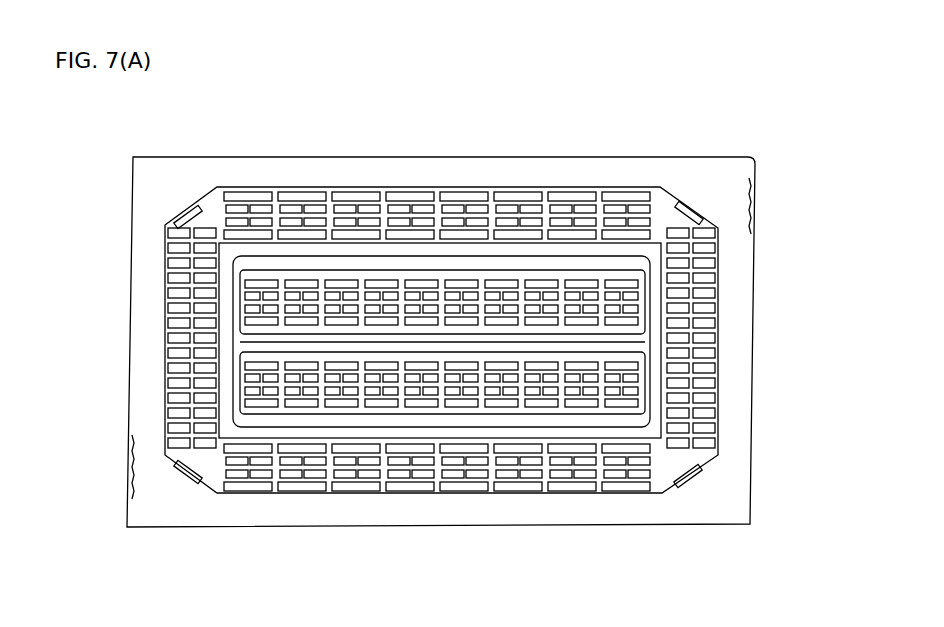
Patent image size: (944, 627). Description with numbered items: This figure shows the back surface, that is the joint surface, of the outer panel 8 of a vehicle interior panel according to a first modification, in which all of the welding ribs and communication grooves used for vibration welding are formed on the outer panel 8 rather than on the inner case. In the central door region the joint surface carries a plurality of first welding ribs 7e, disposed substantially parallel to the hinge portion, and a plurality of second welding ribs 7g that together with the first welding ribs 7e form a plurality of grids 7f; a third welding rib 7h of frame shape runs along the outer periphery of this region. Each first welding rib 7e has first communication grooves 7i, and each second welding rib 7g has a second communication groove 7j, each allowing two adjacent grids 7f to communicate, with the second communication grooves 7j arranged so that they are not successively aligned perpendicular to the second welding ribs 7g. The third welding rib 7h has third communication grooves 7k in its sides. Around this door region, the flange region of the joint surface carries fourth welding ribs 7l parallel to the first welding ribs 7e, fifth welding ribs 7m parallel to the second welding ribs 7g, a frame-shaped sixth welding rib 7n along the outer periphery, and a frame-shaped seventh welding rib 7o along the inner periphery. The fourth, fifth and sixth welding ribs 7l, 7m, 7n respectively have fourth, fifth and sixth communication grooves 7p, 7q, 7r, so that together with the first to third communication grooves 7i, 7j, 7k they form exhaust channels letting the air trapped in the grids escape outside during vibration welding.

The outer panel 8 is at (255, 112).
The third communication grooves 7k is at (163, 227).
The third welding rib 7h is at (262, 272).
The second welding ribs 7g is at (362, 285).
The first welding ribs 7e is at (410, 293).
The grids 7f is at (460, 292).
The first communication grooves 7i is at (503, 295).
The second communication groove 7j is at (600, 292).
The fourth welding ribs 7l is at (720, 283).
The fifth welding ribs 7m is at (717, 323).
The sixth welding rib 7n is at (717, 340).
The fifth communication grooves 7q is at (717, 377).
The sixth communication grooves 7r is at (717, 392).
The seventh welding rib 7o is at (717, 442).
The fourth communication grooves 7p is at (478, 477).